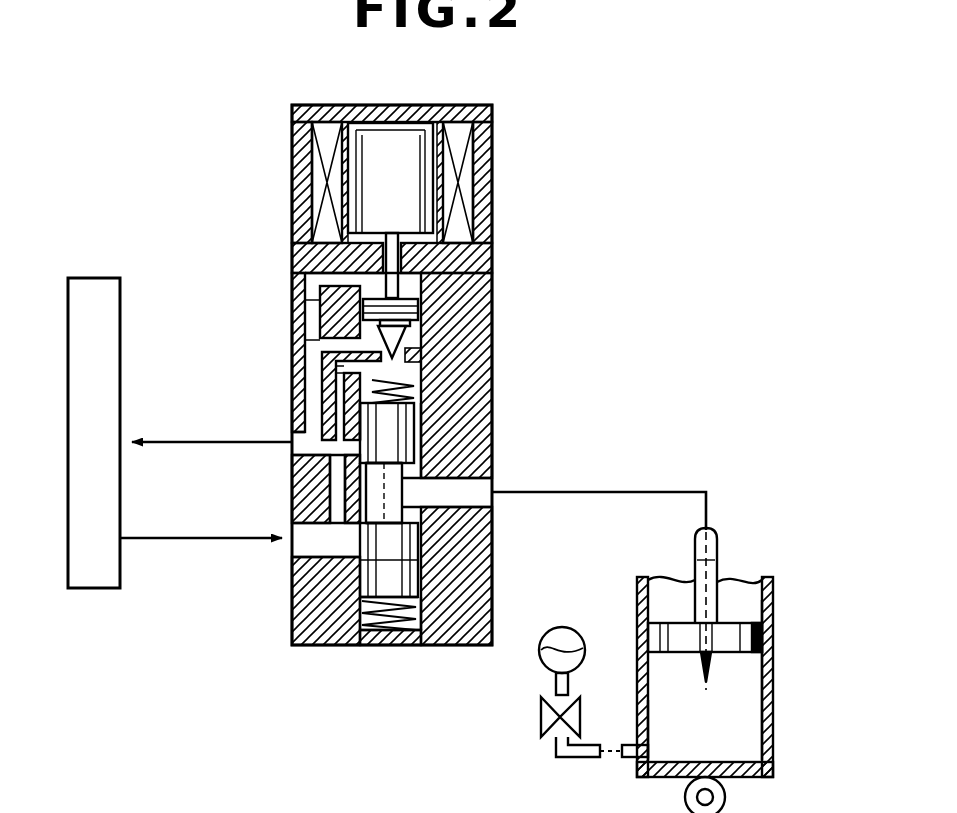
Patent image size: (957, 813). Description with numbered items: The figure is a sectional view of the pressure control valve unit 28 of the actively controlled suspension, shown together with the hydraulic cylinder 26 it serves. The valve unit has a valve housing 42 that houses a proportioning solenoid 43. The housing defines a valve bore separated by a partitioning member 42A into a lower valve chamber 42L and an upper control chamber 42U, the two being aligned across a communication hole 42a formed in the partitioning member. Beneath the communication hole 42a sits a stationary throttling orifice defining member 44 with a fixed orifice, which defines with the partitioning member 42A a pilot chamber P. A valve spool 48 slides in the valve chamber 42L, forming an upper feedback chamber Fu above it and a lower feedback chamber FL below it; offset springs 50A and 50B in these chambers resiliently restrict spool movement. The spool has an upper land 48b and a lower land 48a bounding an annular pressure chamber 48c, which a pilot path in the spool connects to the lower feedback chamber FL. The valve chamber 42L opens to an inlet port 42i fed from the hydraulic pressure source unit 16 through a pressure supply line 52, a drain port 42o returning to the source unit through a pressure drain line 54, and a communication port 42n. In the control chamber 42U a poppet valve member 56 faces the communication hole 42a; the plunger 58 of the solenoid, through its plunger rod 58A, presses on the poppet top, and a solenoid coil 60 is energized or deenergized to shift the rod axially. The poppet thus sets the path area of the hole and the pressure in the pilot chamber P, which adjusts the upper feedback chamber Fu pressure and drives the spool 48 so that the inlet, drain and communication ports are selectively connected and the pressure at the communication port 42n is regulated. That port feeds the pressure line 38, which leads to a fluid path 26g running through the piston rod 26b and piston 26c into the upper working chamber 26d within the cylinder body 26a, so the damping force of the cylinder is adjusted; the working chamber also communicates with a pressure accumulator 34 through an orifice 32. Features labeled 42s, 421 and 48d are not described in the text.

The hydraulic pressure source unit 16 is at (92, 278).
The hydraulic cylinder 26 is at (630, 779).
The cylinder body 26a is at (775, 700).
The piston rod 26b is at (712, 530).
The piston 26c is at (648, 630).
The upper working chamber 26d is at (752, 742).
The fluid path 26g is at (720, 566).
The pressure control valve unit 28 is at (505, 258).
The orifice 32 is at (540, 717).
The pressure accumulator 34 is at (538, 656).
The pressure line 38 is at (660, 492).
The valve housing 42 is at (494, 383).
The partitioning member 42A is at (494, 333).
The valve chamber 42L is at (494, 405).
The control chamber 42U is at (292, 248).
The communication hole 42a is at (494, 310).
The inlet port 42i is at (292, 569).
The communication port 42n is at (470, 510).
The drain port 42o is at (292, 438).
The bypass passage 42s is at (296, 518).
The pilot passage 421 is at (298, 320).
The proportioning solenoid 43 is at (496, 160).
The throttling orifice defining member 44 is at (494, 358).
The valve spool 48 is at (298, 490).
The lower land 48a is at (445, 575).
The upper land 48b is at (494, 433).
The annular pressure chamber 48c is at (494, 462).
The spool bottom 48d is at (330, 598).
The offset spring 50A is at (300, 370).
The offset spring 50B is at (388, 647).
The pressure supply line 52 is at (150, 538).
The pressure drain line 54 is at (150, 442).
The poppet valve member 56 is at (302, 298).
The plunger 58 is at (402, 142).
The plunger rod 58A is at (492, 198).
The solenoid coil 60 is at (320, 152).
The lower feedback chamber FL is at (355, 647).
The upper feedback chamber Fu is at (302, 405).
The pilot chamber P is at (302, 346).